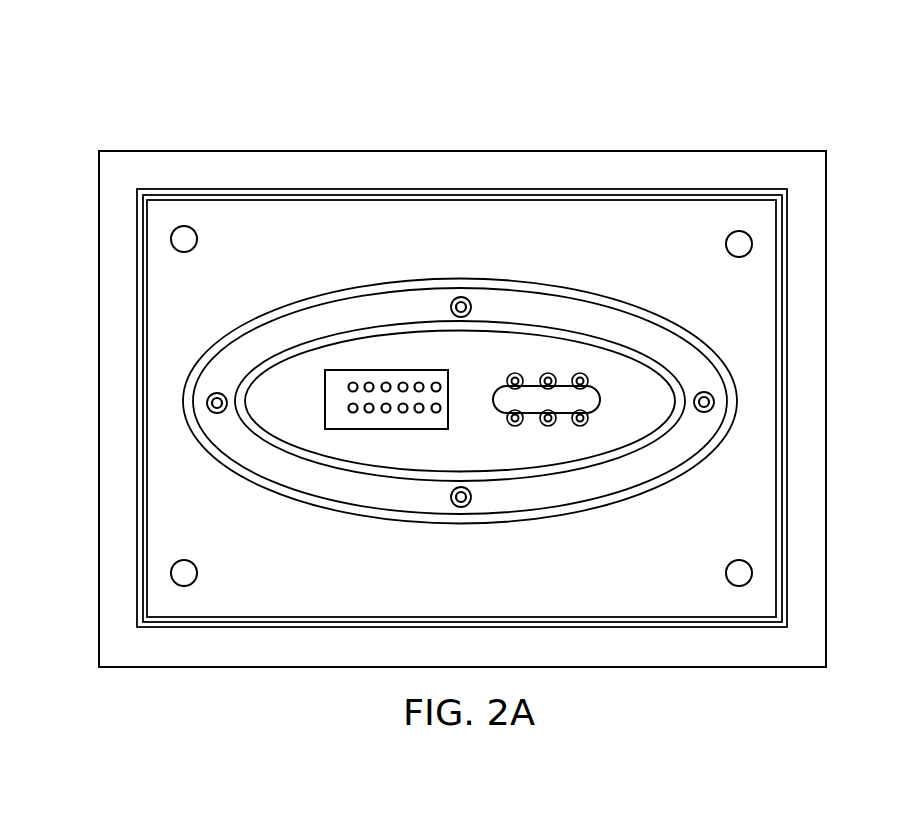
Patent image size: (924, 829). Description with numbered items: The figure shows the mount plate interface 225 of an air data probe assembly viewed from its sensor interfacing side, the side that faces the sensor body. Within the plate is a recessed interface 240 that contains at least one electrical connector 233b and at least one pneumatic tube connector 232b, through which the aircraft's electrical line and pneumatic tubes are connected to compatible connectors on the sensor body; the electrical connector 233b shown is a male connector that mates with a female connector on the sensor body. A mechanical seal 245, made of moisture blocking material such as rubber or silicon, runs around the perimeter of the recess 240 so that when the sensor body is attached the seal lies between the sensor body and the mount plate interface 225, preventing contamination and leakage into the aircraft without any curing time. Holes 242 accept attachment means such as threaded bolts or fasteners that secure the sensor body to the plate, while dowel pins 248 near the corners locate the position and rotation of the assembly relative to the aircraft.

The mount plate interface 225 is at (728, 84).
The dowel pins 248 is at (171, 240).
The recessed interface 240 is at (368, 494).
The mechanical seal 245 is at (632, 450).
The holes 242 is at (462, 508).
The electrical connector 233b is at (375, 368).
The pneumatic tube connector 232b is at (565, 396).